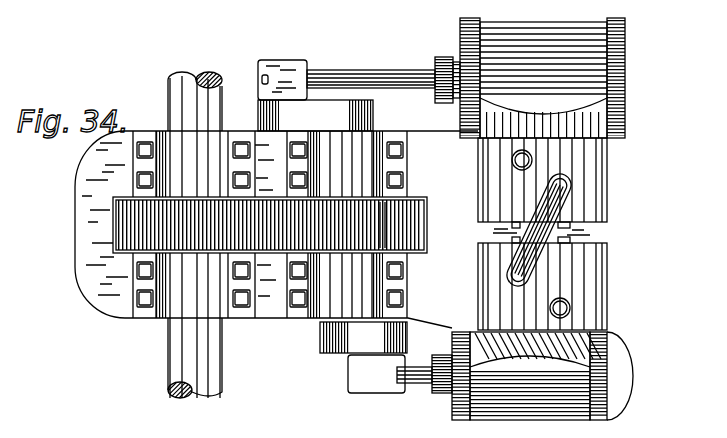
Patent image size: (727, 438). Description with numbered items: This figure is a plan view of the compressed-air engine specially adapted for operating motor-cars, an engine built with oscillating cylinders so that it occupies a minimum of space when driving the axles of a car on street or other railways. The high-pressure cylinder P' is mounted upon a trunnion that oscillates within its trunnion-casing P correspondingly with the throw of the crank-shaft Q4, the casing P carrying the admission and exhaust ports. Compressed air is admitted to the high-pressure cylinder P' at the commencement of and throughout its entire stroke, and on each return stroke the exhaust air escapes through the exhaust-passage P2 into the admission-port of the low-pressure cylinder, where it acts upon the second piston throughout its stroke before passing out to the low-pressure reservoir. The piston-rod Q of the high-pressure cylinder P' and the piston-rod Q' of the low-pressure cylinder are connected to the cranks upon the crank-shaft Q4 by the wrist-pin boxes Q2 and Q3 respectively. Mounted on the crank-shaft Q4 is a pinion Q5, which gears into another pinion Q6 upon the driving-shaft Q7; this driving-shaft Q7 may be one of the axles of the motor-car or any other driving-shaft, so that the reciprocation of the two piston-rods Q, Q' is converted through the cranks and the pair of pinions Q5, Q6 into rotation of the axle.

The trunnion-casing P is at (537, 165).
The high-pressure cylinder P' is at (542, 385).
The exhaust-passage P2 is at (611, 231).
The piston-rod Q is at (404, 207).
The piston-rod Q' is at (383, 66).
The wrist-pin box Q2 is at (376, 374).
The wrist-pin box Q3 is at (283, 68).
The crank-shaft Q4 is at (373, 113).
The pinion Q5 is at (397, 223).
The pinion Q6 is at (138, 223).
The driving-shaft Q7 is at (232, 353).